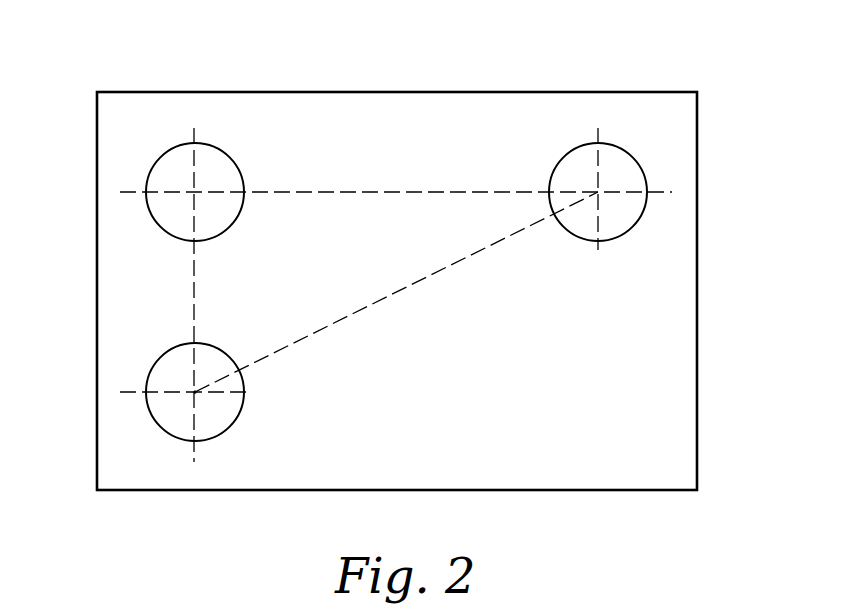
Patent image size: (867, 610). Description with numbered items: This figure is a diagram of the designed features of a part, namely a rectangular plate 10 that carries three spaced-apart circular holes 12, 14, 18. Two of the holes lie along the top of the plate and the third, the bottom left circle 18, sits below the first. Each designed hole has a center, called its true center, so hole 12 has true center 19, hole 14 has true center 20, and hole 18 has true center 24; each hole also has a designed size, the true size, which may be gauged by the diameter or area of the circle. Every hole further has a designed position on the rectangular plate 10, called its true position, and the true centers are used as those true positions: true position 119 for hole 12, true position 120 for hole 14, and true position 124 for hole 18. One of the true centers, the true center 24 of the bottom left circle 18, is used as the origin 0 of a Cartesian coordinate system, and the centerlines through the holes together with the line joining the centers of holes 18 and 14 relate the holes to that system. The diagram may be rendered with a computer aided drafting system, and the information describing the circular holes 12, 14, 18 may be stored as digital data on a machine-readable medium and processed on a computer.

The rectangular plate 10 is at (437, 107).
The circular hole 12 is at (160, 170).
The circular hole 14 is at (635, 168).
The circular hole 18 is at (157, 380).
The true center 19 is at (193, 190).
The true position 119 is at (196, 190).
The true center 20 is at (600, 190).
The true position 120 is at (600, 193).
The true center 24 is at (194, 393).
The true position 124 is at (194, 391).
The origin 0 is at (196, 391).